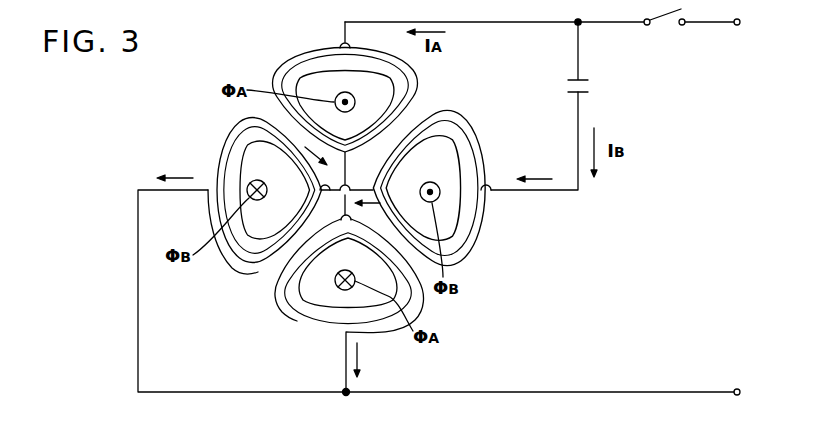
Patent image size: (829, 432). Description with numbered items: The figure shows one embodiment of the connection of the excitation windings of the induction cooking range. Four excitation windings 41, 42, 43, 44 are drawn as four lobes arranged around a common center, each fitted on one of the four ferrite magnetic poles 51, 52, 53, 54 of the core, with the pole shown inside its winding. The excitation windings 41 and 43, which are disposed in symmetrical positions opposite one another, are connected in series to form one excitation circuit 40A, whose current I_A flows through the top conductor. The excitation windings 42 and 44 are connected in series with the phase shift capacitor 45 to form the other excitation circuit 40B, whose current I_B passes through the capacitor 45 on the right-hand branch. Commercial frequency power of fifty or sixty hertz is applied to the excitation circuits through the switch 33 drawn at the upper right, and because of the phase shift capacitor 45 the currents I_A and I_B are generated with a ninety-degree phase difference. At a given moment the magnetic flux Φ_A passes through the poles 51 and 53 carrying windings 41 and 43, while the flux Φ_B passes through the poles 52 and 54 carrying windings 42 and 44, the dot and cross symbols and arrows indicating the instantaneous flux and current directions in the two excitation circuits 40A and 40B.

The switch 33 is at (667, 23).
The excitation circuit 40A is at (532, 23).
The other excitation circuit 40B is at (549, 191).
The excitation winding 41 is at (275, 62).
The excitation winding 42 is at (220, 156).
The excitation winding 43 is at (299, 312).
The excitation winding 44 is at (467, 113).
The phase shift capacitor 45 is at (586, 90).
The ferrite magnetic pole 51 is at (313, 73).
The ferrite magnetic pole 52 is at (247, 148).
The ferrite magnetic pole 53 is at (300, 287).
The ferrite magnetic pole 54 is at (457, 150).